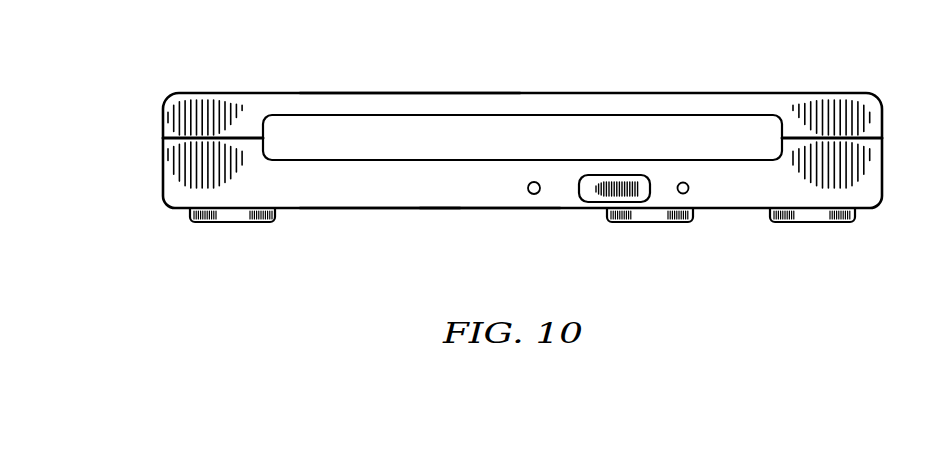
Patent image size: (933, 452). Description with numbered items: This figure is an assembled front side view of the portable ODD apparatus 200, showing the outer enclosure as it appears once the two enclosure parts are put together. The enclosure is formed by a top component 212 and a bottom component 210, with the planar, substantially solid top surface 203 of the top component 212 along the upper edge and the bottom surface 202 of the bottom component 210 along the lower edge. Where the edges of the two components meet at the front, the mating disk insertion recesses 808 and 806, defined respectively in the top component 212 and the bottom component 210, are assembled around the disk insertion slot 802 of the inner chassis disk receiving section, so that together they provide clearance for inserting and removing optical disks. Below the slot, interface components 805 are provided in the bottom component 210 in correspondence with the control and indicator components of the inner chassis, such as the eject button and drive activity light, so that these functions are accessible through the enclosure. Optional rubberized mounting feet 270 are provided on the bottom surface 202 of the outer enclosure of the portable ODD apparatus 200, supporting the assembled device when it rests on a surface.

The portable ODD apparatus 200 is at (126, 60).
The bottom surface 202 is at (387, 210).
The top surface 203 is at (410, 92).
The bottom component 210 is at (495, 198).
The top component 212 is at (748, 100).
The mounting feet 270 is at (212, 222).
The disk insertion slot 802 is at (490, 135).
The interface components 805 is at (538, 193).
The mating disk insertion recess 806 is at (330, 160).
The mating disk insertion recess 808 is at (337, 115).